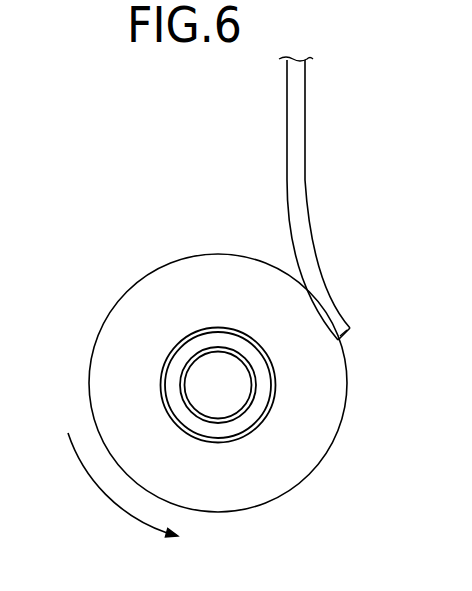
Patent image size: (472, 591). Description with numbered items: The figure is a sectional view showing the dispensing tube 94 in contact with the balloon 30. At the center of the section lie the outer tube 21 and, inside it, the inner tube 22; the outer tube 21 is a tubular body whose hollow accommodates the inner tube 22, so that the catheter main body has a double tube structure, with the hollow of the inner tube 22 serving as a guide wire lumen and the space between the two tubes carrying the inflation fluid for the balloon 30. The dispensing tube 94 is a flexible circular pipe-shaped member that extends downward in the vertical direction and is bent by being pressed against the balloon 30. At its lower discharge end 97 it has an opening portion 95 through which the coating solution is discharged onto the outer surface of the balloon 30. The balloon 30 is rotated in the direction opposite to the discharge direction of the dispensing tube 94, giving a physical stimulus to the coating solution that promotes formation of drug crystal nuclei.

The balloon 30 is at (112, 344).
The outer tube 21 is at (168, 392).
The inner tube 22 is at (212, 418).
The dispensing tube 94 is at (293, 92).
The opening portion 95 is at (346, 339).
The discharge end 97 is at (347, 327).